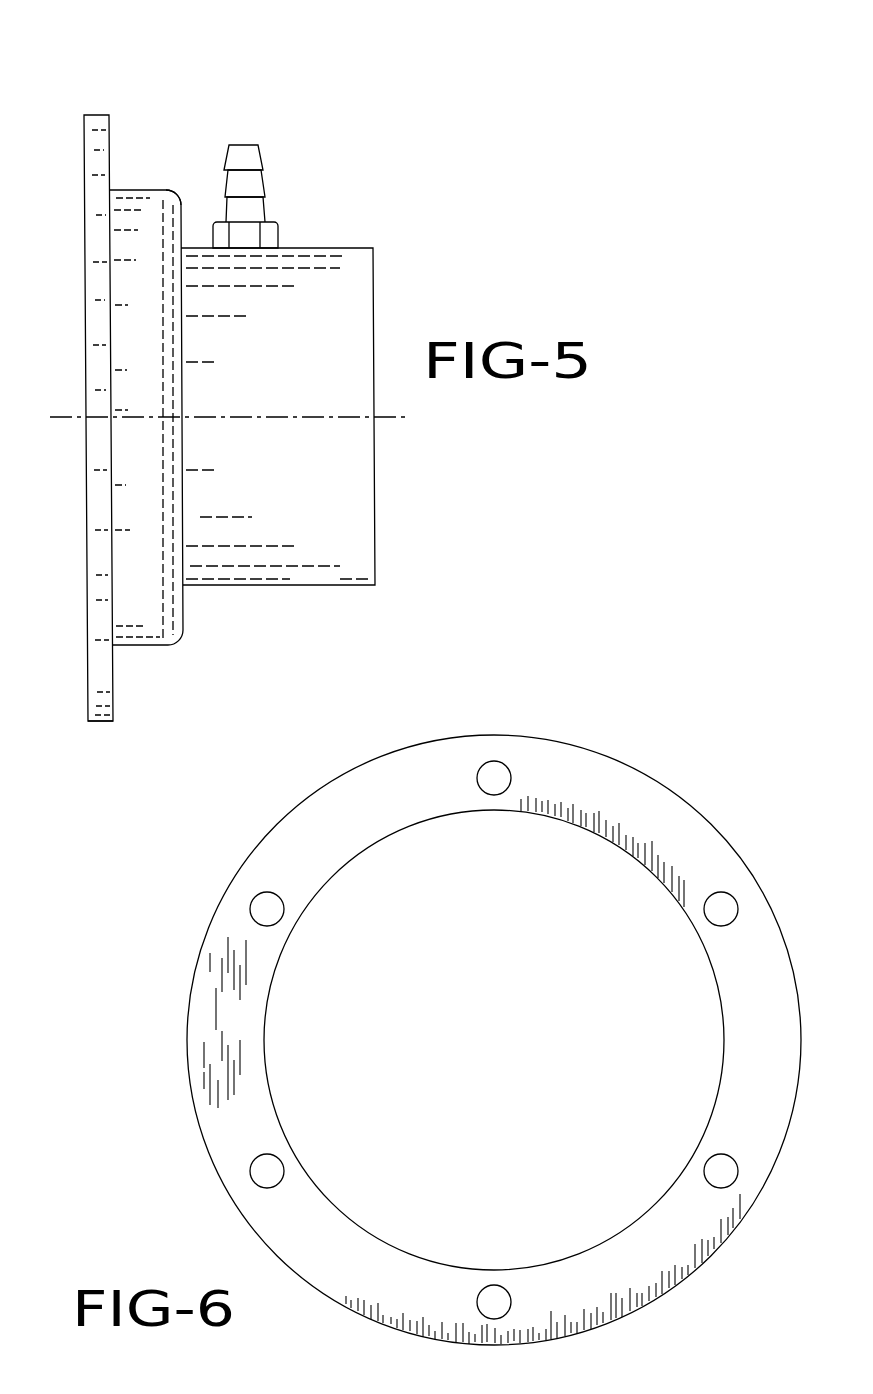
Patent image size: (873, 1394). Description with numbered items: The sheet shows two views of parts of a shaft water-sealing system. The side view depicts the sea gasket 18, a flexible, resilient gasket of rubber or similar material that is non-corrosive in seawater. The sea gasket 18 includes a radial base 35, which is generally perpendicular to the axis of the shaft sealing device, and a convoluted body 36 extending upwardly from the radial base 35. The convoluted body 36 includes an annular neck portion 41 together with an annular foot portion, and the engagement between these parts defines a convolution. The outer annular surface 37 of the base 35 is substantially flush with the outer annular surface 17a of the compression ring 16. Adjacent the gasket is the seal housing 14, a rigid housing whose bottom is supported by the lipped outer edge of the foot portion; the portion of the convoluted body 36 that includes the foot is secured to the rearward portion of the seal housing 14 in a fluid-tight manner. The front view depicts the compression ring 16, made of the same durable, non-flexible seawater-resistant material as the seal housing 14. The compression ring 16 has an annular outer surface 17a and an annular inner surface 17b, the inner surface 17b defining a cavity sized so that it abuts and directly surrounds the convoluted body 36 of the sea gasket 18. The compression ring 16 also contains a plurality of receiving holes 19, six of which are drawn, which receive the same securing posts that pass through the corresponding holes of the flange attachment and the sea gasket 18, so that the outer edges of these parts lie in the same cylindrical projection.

In FIG. 5, the seal housing 14 is at (376, 247).
In FIG. 5, the sea gasket 18 is at (77, 113).
In FIG. 5, the annular neck portion 41 is at (130, 190).
In FIG. 5, the convoluted body 36 is at (178, 189).
In FIG. 5, the radial base 35 is at (101, 620).
In FIG. 5, the outer annular surface 37 is at (97, 722).
In FIG. 6, the compression ring 16 is at (439, 1016).
In FIG. 6, the annular outer surface 17a is at (188, 1012).
In FIG. 6, the annular inner surface 17b is at (277, 1113).
In FIG. 6, the receiving holes 19 is at (258, 908).